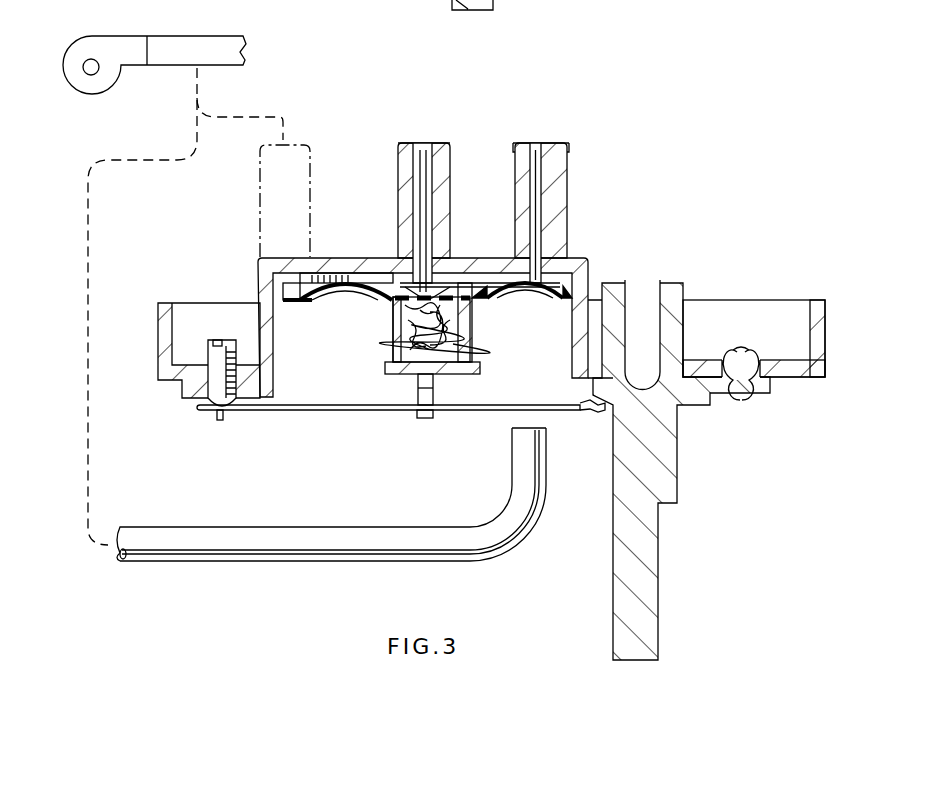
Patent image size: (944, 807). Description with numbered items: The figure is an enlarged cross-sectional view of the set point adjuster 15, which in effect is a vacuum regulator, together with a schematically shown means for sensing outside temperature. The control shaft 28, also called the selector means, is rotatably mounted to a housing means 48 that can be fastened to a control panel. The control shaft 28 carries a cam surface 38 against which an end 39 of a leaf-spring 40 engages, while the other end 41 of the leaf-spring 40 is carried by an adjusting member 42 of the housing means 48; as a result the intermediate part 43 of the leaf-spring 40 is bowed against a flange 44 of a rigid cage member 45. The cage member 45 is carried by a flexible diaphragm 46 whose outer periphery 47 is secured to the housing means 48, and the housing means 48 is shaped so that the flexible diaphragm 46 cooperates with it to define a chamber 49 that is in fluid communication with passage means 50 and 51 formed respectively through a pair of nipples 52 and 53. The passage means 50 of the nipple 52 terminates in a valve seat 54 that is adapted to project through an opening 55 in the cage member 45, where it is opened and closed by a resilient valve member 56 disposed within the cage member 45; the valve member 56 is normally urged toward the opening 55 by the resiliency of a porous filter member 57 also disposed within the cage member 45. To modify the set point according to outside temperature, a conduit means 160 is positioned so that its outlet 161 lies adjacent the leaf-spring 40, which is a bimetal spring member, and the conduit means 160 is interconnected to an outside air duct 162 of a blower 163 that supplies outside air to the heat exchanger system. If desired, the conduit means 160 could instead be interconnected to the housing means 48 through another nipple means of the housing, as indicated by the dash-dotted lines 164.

The set point adjuster 15 is at (471, 382).
The control shaft 28 is at (667, 472).
The cam surface 38 is at (697, 408).
The end of leaf-spring 39 is at (595, 412).
The leaf-spring 40 is at (343, 413).
The other end of leaf-spring 41 is at (253, 413).
The adjusting member 42 is at (215, 377).
The intermediate part of leaf-spring 43 is at (427, 400).
The flange 44 is at (423, 420).
The cage member 45 is at (472, 337).
The flexible diaphragm 46 is at (523, 298).
The outer periphery of diaphragm 47 is at (285, 290).
The housing means 48 is at (338, 258).
The chamber 49 is at (357, 272).
The passage means 50 is at (448, 178).
The passage means 51 is at (567, 170).
The nipple 52 is at (450, 145).
The nipple 53 is at (568, 150).
The valve seat 54 is at (422, 277).
The opening 55 is at (432, 287).
The resilient valve member 56 is at (403, 315).
The porous filter member 57 is at (397, 333).
The conduit means 160 is at (285, 566).
The outlet 161 is at (513, 428).
The outside air duct 162 is at (197, 42).
The blower 163 is at (94, 88).
The dash-dotted lines 164 is at (297, 143).